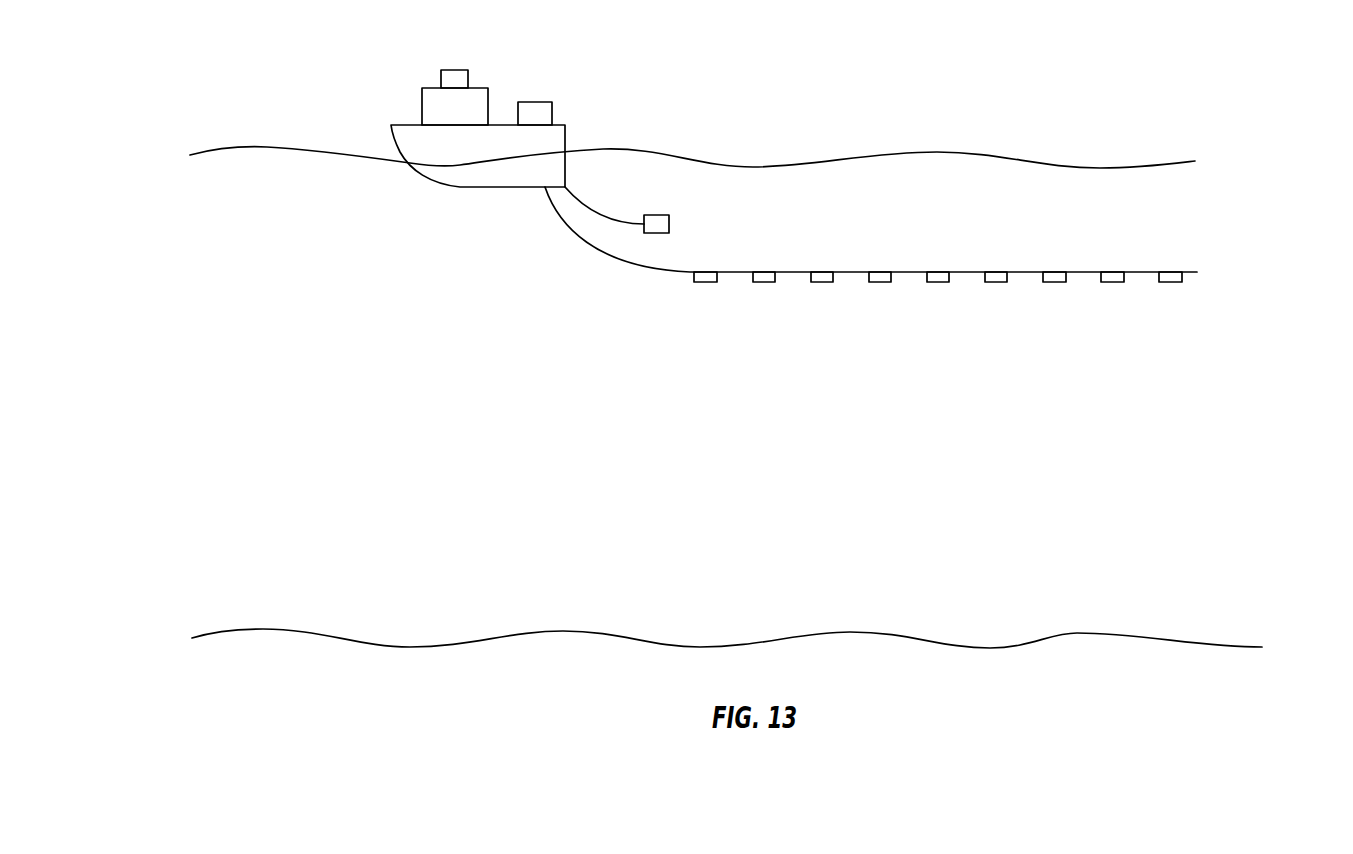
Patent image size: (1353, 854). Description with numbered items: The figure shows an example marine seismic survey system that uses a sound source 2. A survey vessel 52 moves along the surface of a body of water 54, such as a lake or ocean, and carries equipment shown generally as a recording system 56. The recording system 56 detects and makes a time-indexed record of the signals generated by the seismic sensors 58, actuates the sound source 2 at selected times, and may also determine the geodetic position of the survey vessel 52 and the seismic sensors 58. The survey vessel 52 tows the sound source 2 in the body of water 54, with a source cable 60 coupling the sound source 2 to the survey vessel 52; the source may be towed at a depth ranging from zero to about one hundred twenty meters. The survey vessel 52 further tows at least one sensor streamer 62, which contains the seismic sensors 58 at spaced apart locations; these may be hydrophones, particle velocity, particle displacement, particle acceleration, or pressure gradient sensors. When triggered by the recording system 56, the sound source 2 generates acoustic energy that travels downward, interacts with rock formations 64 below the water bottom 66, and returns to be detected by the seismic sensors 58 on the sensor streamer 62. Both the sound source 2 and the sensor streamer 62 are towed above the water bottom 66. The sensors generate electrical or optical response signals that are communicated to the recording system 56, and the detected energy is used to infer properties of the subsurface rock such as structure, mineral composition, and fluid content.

The sound source 2 is at (669, 224).
The survey vessel 52 is at (566, 137).
The body of water 54 is at (268, 310).
The recording system 56 is at (534, 100).
The seismic sensors 58 is at (705, 283).
The source cable 60 is at (593, 210).
The sensor streamer 62 is at (850, 271).
The rock formations 64 is at (1140, 680).
The water bottom 66 is at (1140, 632).